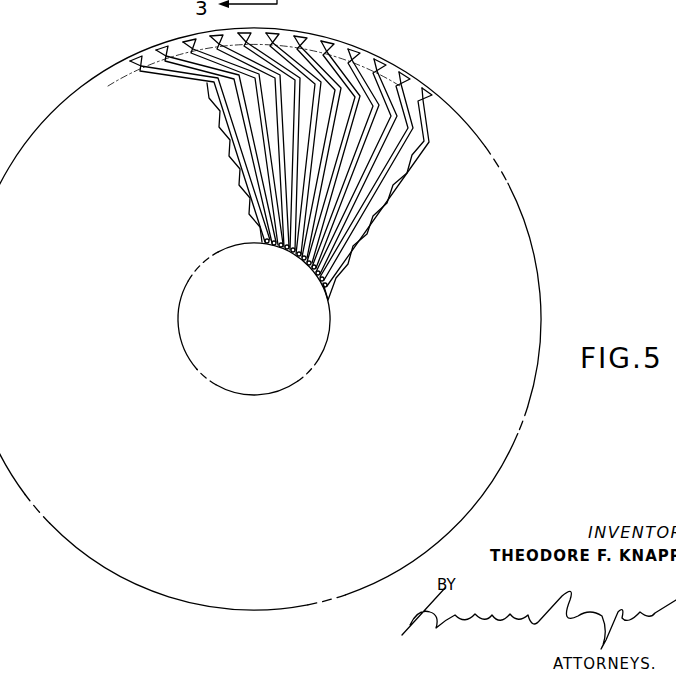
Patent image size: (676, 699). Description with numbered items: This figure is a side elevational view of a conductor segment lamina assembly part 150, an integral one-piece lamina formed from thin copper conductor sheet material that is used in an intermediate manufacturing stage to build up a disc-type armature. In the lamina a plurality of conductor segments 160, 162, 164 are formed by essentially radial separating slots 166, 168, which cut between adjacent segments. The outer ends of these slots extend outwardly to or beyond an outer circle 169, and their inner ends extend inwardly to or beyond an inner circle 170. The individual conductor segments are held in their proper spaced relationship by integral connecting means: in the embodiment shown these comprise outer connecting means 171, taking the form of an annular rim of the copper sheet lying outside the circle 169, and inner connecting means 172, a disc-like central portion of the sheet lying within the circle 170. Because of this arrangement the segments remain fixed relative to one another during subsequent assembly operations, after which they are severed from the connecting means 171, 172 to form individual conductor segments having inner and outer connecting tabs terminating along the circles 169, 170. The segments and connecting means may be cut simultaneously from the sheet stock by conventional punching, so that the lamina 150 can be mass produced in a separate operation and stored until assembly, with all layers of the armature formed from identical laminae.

The conductor segment lamina assembly part 150 is at (513, 181).
The conductor segment 160 is at (317, 152).
The conductor segment 162 is at (373, 115).
The conductor segment 164 is at (347, 100).
The slot 166 is at (383, 132).
The slot 168 is at (362, 140).
The circle 169 is at (168, 56).
The circle 170 is at (220, 240).
The outer connecting means 171 is at (376, 61).
The inner connecting means 172 is at (268, 320).